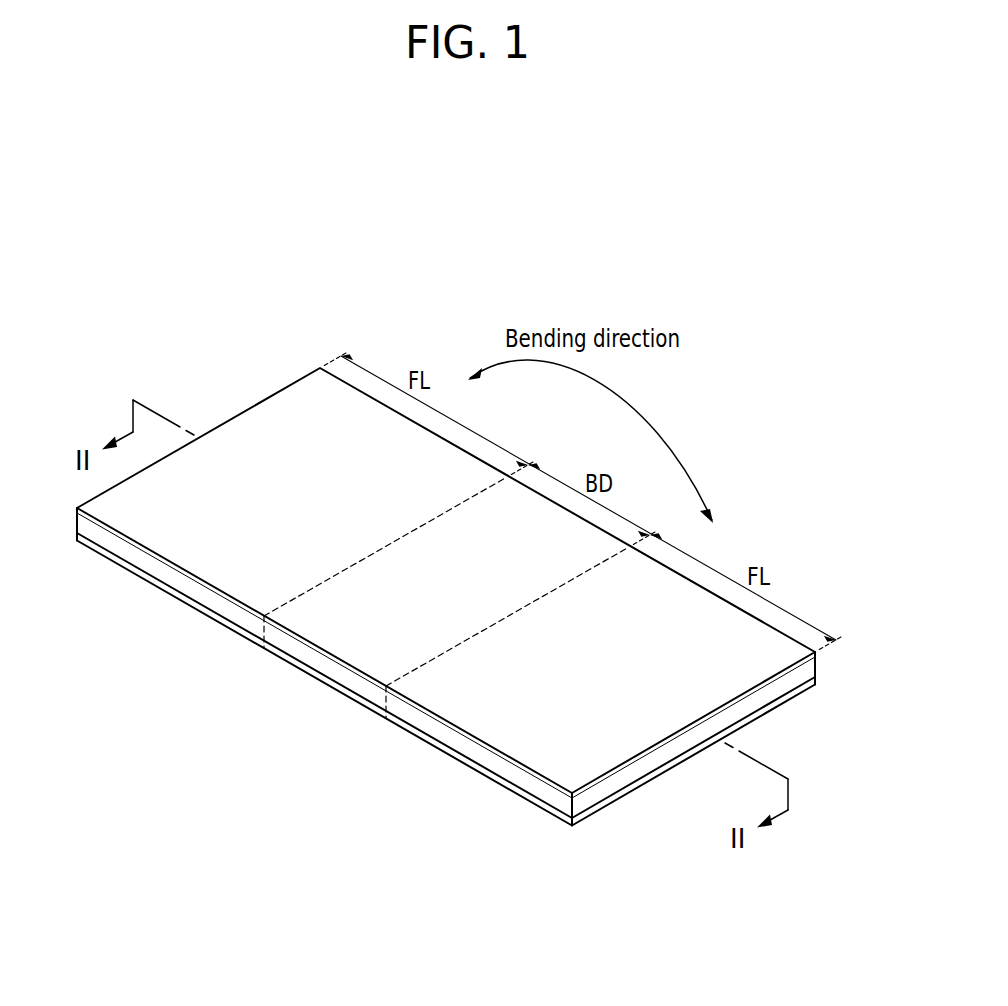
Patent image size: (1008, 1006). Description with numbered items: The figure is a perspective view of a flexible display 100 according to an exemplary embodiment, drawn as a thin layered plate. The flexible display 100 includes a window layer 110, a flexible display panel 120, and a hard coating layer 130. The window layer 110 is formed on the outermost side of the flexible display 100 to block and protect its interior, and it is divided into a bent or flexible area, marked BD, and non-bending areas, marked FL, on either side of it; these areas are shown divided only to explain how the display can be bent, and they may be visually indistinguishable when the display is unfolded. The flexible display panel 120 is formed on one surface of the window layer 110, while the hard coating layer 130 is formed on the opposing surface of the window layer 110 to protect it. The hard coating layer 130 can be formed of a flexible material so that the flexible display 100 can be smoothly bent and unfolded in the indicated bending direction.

The flexible display 100 is at (441, 304).
The window layer 110 is at (467, 748).
The flexible display panel 120 is at (410, 733).
The hard coating layer 130 is at (520, 765).